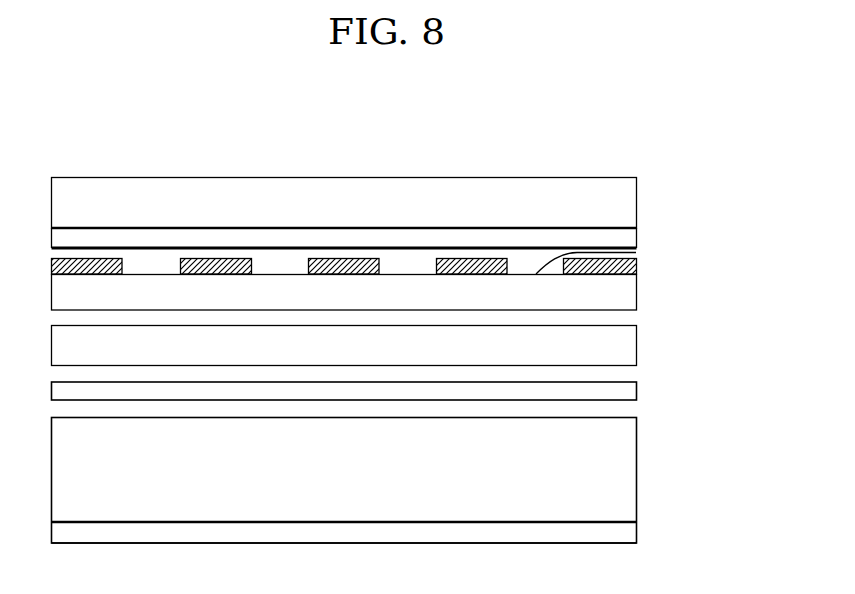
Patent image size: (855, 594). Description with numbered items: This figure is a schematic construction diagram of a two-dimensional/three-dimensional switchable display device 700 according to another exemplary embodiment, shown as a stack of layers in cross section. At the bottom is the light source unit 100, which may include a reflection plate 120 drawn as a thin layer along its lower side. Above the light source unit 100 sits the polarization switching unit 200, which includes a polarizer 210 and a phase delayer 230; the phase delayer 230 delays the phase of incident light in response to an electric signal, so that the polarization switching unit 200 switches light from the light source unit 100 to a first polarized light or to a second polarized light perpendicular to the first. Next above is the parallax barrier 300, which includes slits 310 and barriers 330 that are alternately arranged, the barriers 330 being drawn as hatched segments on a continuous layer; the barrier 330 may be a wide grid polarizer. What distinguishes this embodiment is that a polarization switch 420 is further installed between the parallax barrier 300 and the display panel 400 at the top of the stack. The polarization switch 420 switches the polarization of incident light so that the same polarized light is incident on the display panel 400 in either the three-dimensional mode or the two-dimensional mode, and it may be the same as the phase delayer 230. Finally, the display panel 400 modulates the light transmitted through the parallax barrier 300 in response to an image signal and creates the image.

The 2D/3D switchable display device 700 is at (663, 155).
The display panel 400 is at (620, 201).
The polarization switch 420 is at (620, 238).
The slit 310 is at (636, 256).
The barrier 330 is at (636, 276).
The parallax barrier 300 is at (726, 254).
The phase delayer 230 is at (620, 344).
The polarizer 210 is at (620, 392).
The polarization switching unit 200 is at (726, 334).
The light source unit 100 is at (620, 468).
The reflection plate 120 is at (620, 533).